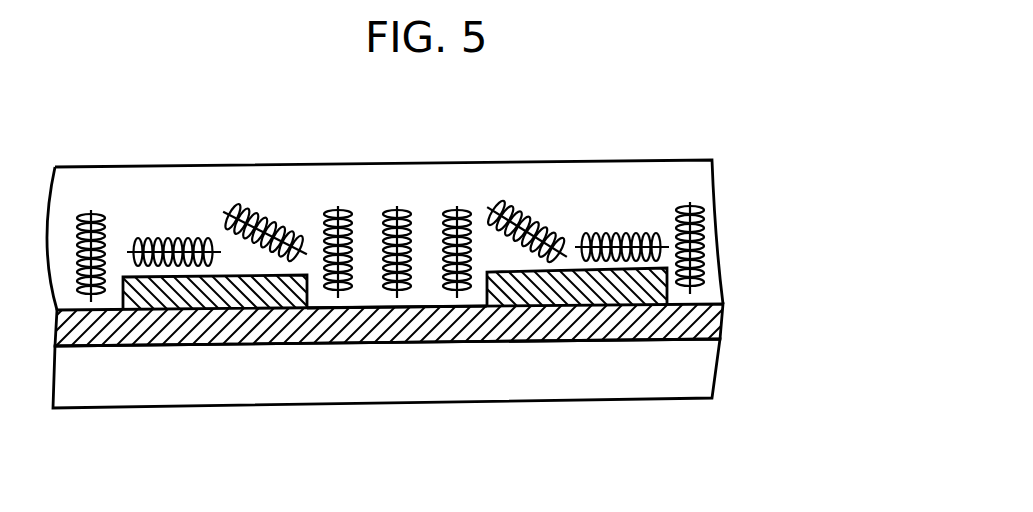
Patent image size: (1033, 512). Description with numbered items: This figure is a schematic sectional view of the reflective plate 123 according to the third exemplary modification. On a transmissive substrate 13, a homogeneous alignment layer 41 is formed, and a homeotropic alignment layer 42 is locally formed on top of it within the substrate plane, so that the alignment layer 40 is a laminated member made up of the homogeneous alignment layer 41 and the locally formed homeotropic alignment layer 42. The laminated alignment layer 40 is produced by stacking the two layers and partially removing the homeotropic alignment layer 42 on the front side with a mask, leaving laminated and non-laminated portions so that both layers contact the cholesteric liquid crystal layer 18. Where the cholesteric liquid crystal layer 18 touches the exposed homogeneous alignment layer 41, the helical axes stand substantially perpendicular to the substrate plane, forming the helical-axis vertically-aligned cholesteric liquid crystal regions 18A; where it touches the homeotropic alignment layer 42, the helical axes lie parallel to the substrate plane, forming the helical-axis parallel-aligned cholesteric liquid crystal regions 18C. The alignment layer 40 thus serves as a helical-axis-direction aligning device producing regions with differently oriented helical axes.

The reflective plate 123 is at (690, 122).
The cholesteric liquid crystal layer 18 is at (680, 182).
The helical-axis parallel-aligned cholesteric liquid crystal region 18C is at (302, 157).
The helical-axis vertically-aligned cholesteric liquid crystal region 18A is at (483, 152).
The alignment layer 40 is at (752, 303).
The transmissive substrate 13 is at (695, 371).
The homogeneous alignment layer 41 is at (353, 308).
The homeotropic alignment layer 42 is at (210, 308).